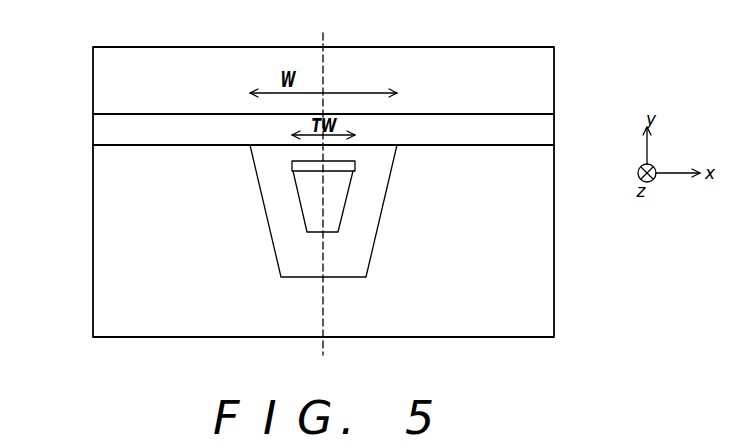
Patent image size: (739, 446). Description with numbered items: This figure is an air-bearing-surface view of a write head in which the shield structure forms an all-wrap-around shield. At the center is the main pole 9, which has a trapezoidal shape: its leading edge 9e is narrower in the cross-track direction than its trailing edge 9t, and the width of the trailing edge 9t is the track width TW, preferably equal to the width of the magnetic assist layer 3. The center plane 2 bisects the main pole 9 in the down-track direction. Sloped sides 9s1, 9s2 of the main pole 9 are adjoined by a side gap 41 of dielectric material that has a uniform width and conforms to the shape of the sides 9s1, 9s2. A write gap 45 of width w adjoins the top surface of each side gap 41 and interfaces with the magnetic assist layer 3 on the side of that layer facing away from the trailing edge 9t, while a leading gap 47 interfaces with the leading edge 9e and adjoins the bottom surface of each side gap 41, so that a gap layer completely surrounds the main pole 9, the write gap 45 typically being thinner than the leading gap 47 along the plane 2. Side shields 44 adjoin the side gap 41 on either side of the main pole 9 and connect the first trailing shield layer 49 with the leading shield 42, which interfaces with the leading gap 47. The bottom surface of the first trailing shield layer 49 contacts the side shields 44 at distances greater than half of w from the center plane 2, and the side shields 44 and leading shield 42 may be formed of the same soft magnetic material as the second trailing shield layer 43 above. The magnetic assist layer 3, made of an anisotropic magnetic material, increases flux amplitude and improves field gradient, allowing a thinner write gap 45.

The plane 2 is at (325, 197).
The magnetic assist layer 3 is at (302, 166).
The main pole 9 is at (338, 182).
The trailing edge 9t is at (302, 172).
The sloped side 9s1 is at (343, 216).
The sloped side 9s2 is at (301, 214).
The leading edge 9e is at (331, 233).
The side gap 41 is at (287, 210).
The leading shield 42 is at (302, 322).
The second trailing shield layer 43 is at (540, 83).
The side shields 44 is at (110, 240).
The write gap 45 is at (337, 153).
The leading gap 47 is at (312, 250).
The first trailing shield layer 49 is at (110, 130).